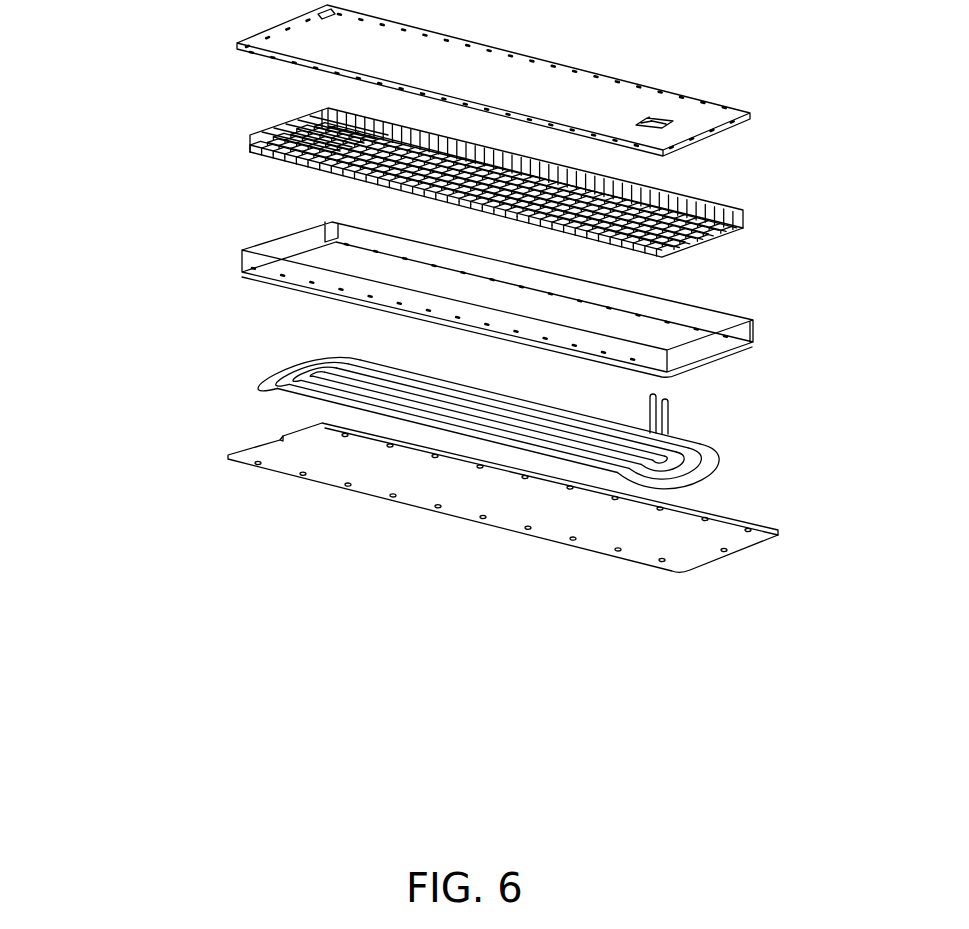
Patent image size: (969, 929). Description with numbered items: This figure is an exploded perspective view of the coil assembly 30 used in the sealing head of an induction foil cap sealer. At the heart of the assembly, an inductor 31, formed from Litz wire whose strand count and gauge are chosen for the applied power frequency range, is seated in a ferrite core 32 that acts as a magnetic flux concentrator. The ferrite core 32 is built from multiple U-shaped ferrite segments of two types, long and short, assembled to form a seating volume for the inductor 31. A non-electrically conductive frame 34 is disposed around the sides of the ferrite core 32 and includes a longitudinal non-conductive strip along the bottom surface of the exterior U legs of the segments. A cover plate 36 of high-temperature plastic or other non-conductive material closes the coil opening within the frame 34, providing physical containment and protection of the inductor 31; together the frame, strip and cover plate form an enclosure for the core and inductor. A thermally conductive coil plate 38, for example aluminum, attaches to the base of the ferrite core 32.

The coil assembly 30 is at (225, 553).
The inductor 31 is at (487, 395).
The ferrite core 32 is at (705, 250).
The frame 34 is at (727, 322).
The cover plate 36 is at (700, 540).
The coil plate 38 is at (720, 120).